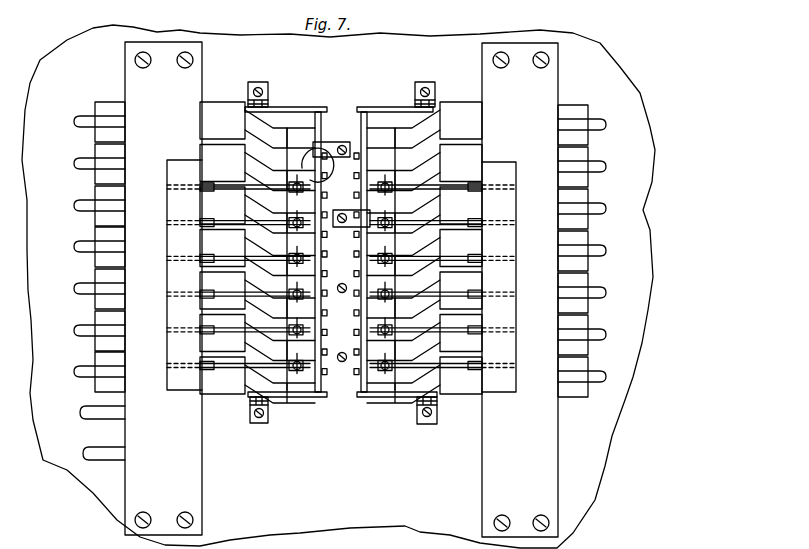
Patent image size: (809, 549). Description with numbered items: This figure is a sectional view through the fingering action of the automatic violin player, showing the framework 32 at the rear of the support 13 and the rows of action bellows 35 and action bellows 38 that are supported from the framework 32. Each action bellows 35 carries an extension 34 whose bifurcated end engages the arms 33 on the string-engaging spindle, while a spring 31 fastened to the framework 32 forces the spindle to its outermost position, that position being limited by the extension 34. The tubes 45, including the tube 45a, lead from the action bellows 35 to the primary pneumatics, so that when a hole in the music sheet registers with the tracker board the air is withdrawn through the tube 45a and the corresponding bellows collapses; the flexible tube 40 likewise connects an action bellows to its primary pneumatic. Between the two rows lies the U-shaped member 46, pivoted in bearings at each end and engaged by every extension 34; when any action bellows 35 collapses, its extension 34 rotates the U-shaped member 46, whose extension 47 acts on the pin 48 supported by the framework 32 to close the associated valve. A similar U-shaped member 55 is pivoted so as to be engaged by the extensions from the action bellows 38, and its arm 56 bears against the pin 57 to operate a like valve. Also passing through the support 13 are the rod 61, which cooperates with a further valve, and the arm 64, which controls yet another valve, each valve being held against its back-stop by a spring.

The support 13 is at (605, 432).
The spring 31 is at (226, 220).
The framework 32 is at (190, 480).
The arms 33 is at (332, 263).
The extension 34 is at (262, 170).
The action bellows 35 is at (210, 113).
The action bellows 38 is at (580, 138).
The flexible tube 40 is at (85, 446).
The tubes 45 is at (78, 332).
The tube 45a is at (80, 162).
The U-shaped member 46 is at (301, 107).
The extension 47 is at (330, 147).
The pin 48 is at (342, 155).
The U-shaped member 55 is at (381, 397).
The arm 56 is at (345, 224).
The pin 57 is at (343, 211).
The rod 61 is at (342, 362).
The arm 64 is at (342, 293).